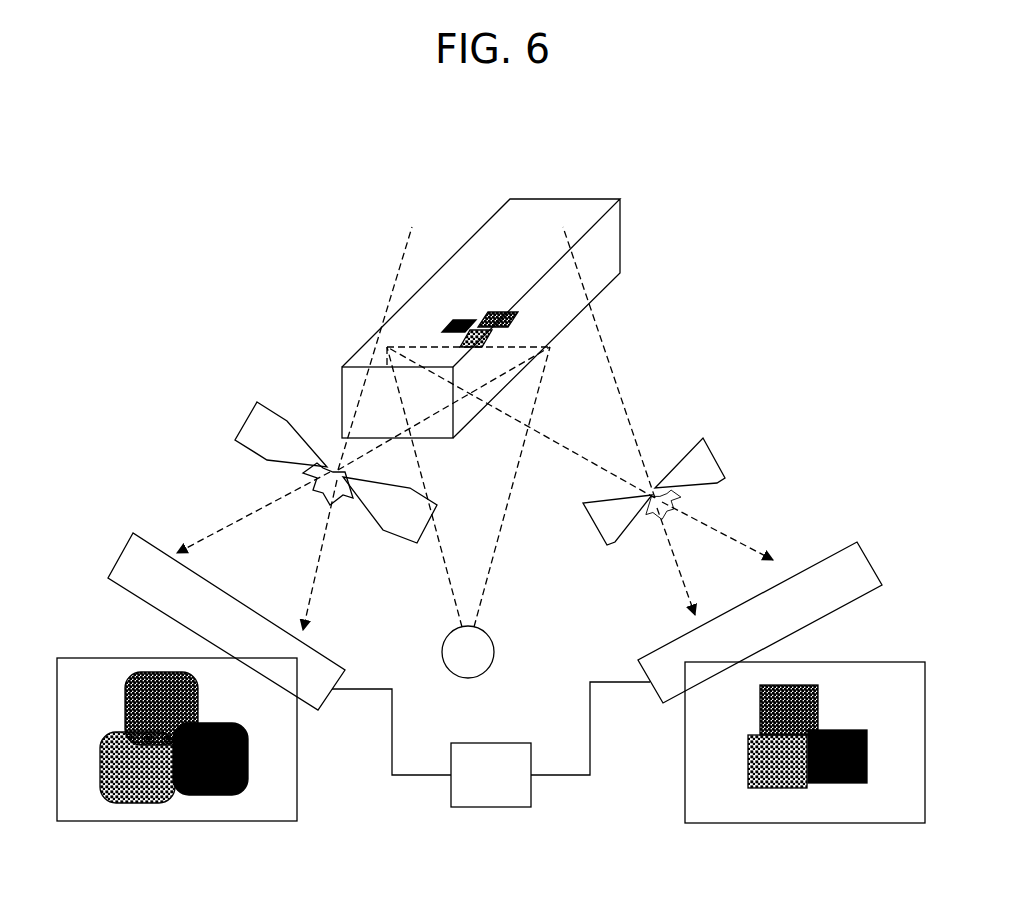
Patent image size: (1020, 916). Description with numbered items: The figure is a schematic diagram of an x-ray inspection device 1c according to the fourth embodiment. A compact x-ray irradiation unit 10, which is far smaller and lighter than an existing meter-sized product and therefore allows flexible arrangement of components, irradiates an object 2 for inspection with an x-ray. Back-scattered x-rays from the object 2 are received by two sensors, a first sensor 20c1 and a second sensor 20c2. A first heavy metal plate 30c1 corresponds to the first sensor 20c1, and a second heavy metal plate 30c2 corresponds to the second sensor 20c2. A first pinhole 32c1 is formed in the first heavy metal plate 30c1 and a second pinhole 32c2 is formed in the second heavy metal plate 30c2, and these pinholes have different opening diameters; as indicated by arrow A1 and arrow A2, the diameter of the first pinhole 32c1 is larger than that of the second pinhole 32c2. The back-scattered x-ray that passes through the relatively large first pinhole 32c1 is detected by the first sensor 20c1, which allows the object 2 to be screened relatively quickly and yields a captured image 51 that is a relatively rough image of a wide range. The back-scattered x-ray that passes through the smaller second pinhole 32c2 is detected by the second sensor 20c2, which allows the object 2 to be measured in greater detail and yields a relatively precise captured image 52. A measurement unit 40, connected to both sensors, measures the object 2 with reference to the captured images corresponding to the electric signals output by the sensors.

The x-ray inspection device 1c is at (858, 233).
The object for inspection 2 is at (620, 200).
The x-ray irradiation unit 10 is at (490, 641).
The first sensor 20c1 is at (132, 537).
The second sensor 20c2 is at (867, 562).
The first heavy metal plate 30c1 is at (247, 421).
The second heavy metal plate 30c2 is at (720, 465).
The first pinhole 32c1 is at (333, 460).
The second pinhole 32c2 is at (655, 480).
The arrow A1 is at (322, 492).
The arrow A2 is at (670, 513).
The measurement unit 40 is at (484, 743).
The captured image 51 is at (112, 658).
The captured image 52 is at (848, 662).